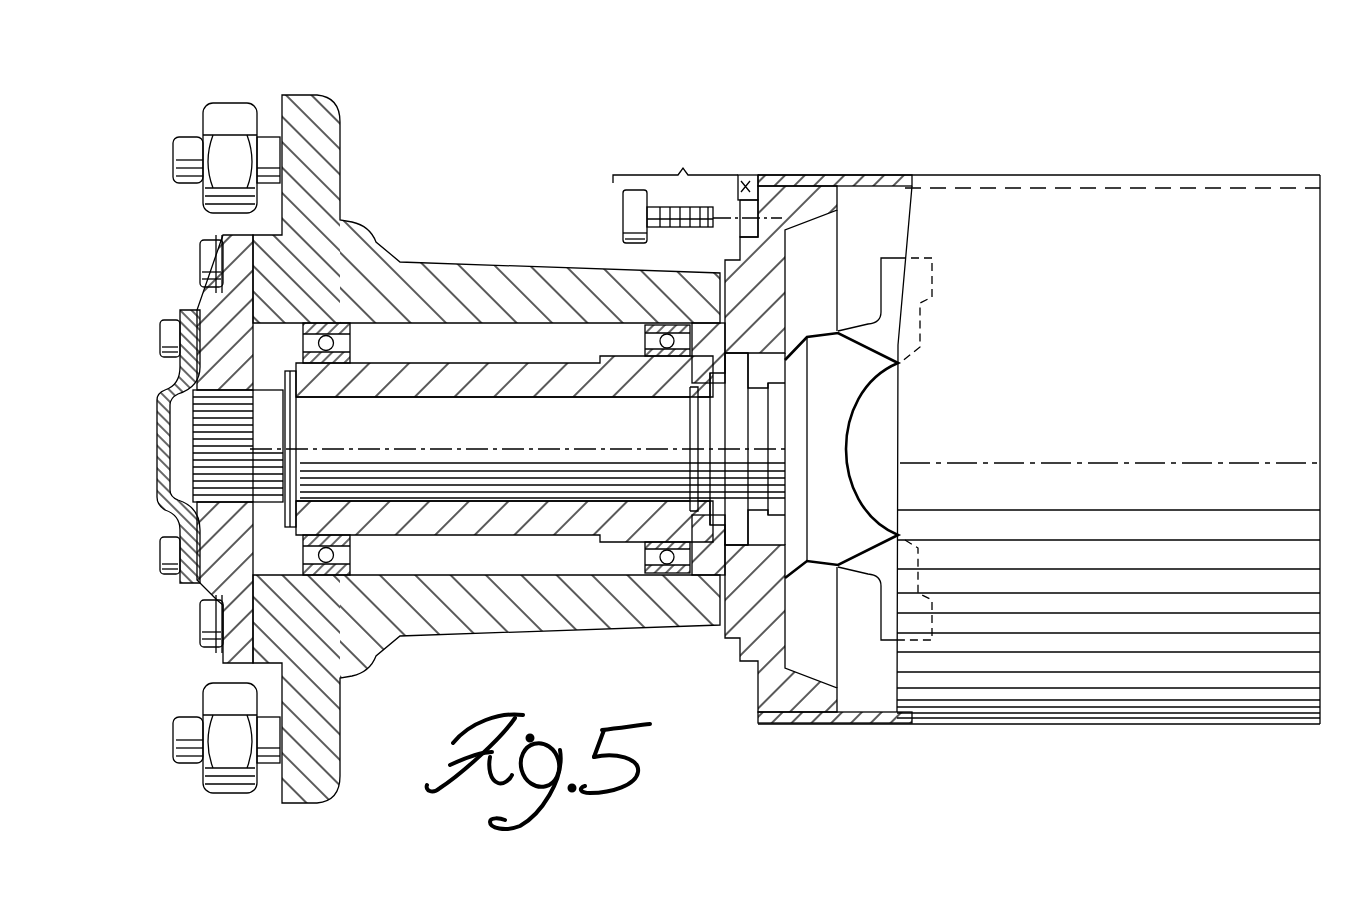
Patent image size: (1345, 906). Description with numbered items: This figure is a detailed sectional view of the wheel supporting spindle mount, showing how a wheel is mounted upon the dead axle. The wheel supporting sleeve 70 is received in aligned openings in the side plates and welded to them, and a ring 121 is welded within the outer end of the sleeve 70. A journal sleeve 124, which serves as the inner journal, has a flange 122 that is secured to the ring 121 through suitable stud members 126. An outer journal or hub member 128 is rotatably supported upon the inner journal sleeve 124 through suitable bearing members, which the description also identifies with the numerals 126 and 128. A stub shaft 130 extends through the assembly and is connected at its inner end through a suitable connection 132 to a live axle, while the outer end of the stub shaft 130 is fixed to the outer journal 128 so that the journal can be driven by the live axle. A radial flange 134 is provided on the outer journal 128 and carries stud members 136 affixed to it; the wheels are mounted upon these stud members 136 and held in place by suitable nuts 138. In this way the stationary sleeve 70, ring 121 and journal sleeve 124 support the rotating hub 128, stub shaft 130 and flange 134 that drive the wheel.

The wheel supporting sleeve 70 is at (1160, 203).
The ring 121 is at (800, 195).
The flange 122 is at (743, 183).
The journal sleeve 124 is at (452, 373).
The stud members 126 is at (625, 194).
The outer journal or hub member 128 is at (426, 272).
The stub shaft 130 is at (493, 420).
The connection 132 is at (858, 338).
The radial flange 134 is at (328, 150).
The stud members 136 is at (184, 147).
The nuts 138 is at (233, 112).